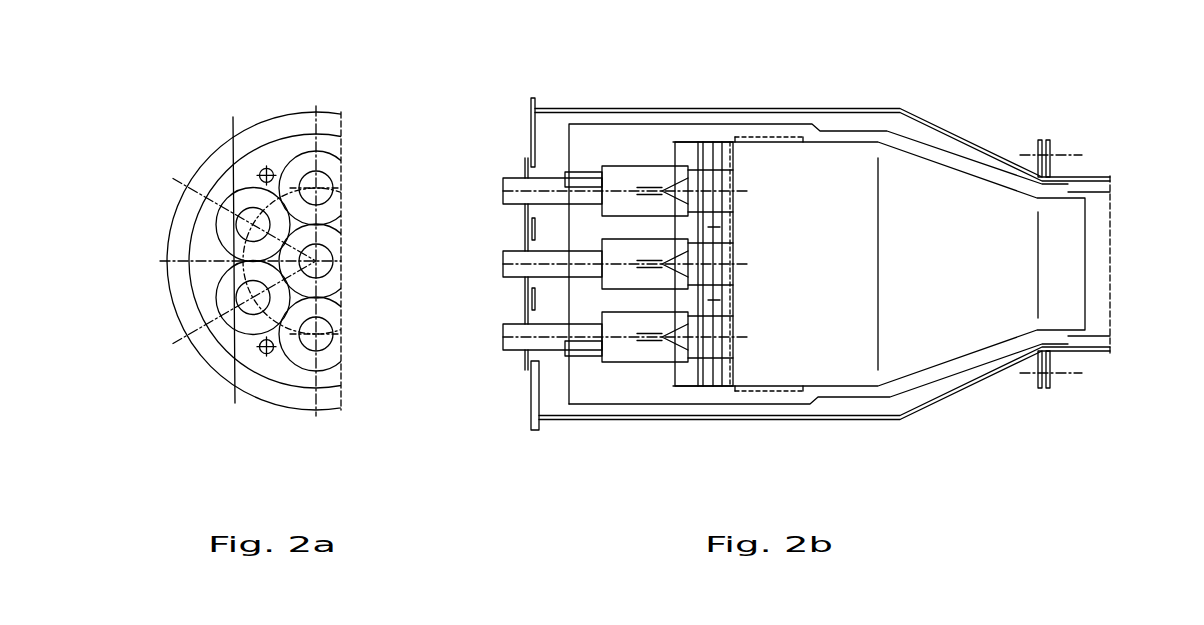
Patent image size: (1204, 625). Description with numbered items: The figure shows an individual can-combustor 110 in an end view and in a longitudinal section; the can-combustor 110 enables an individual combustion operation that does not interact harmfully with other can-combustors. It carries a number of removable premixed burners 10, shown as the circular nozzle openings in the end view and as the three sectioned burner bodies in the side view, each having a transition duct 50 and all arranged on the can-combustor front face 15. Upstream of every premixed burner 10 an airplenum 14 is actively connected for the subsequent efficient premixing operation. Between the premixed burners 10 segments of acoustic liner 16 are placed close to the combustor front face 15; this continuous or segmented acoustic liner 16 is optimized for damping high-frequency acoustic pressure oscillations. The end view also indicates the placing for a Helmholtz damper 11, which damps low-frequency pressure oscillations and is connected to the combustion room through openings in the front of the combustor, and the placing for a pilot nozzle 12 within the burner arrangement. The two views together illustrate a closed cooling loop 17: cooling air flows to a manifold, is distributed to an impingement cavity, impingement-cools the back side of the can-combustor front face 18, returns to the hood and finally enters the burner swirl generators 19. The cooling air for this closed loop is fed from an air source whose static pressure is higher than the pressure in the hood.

In FIG. 2a, the premixed burner 10 is at (213, 218).
In FIG. 2b, the premixed burner 10 is at (703, 187).
In FIG. 2a, the Helmholtz damper 11 is at (214, 279).
In FIG. 2a, the pilot nozzle 12 is at (218, 338).
In FIG. 2b, the airplenum 14 is at (608, 166).
In FIG. 2b, the can-combustor front face 15 is at (799, 228).
In FIG. 2b, the acoustic liner segment 16 is at (786, 136).
In FIG. 2a, the closed cooling loop 17 is at (266, 167).
In FIG. 2b, the back side of the can-combustor front face 18 is at (726, 141).
In FIG. 2b, the burner swirl generator 19 is at (670, 180).
In FIG. 2b, the transition duct 50 is at (737, 353).
In FIG. 2a, the can-combustor 110 is at (299, 111).
In FIG. 2b, the can-combustor 110 is at (865, 109).